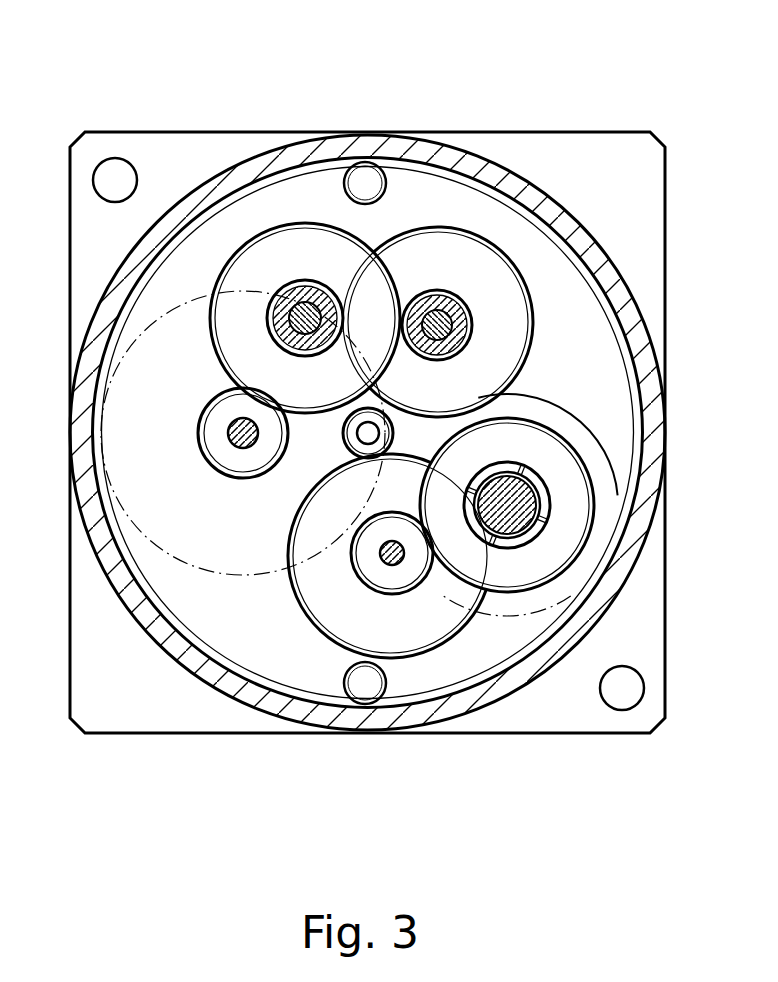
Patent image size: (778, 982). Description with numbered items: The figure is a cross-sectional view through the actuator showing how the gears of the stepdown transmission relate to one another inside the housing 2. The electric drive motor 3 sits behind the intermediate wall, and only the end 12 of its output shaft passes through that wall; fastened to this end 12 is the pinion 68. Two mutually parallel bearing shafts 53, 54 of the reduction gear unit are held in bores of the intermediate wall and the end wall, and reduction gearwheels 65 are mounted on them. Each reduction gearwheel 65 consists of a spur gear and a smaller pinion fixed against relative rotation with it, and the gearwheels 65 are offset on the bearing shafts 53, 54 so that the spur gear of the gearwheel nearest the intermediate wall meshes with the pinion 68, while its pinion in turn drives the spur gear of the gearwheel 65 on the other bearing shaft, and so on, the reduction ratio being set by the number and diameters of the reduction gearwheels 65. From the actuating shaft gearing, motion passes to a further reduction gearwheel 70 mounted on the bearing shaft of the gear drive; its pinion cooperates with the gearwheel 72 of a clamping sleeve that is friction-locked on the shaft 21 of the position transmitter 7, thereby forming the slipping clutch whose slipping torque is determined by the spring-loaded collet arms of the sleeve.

The housing 2 is at (527, 185).
The electric drive motor 3 is at (257, 577).
The position transmitter 7 is at (655, 510).
The end of output shaft of drive motor 12 is at (241, 448).
The shaft of position transmitter 21 is at (545, 484).
The bearing shaft 53 is at (301, 281).
The bearing shaft 54 is at (437, 310).
The reduction gearwheel 65 is at (467, 230).
The pinion 68 is at (216, 441).
The further reduction gearwheel 70 is at (432, 648).
The gearwheel of clamping sleeve 72 is at (547, 547).